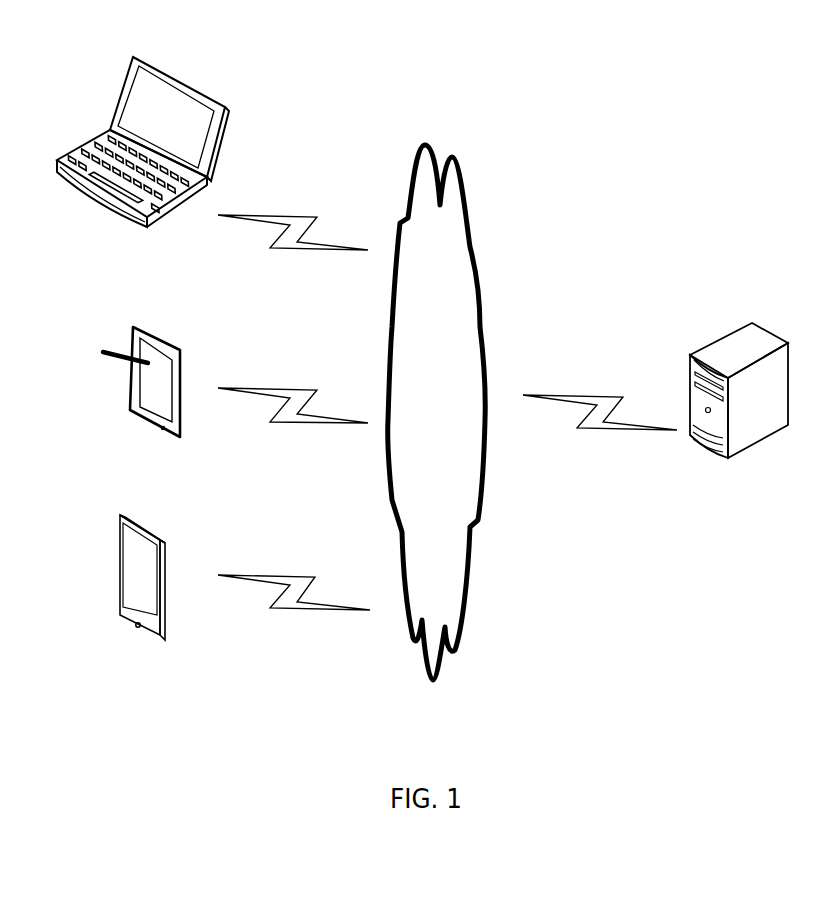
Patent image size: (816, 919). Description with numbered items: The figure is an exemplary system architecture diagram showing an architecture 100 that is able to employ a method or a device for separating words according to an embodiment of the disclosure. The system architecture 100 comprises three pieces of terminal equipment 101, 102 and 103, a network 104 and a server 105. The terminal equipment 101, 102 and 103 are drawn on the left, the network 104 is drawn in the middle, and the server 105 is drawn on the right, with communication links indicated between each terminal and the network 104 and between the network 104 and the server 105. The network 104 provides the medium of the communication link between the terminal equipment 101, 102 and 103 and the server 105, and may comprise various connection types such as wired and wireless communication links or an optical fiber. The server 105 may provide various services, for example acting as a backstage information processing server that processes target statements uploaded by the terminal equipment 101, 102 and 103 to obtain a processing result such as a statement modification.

The system architecture 100 is at (703, 46).
The terminal equipment 101 is at (142, 607).
The terminal equipment 102 is at (141, 404).
The terminal equipment 103 is at (143, 161).
The network 104 is at (437, 412).
The server 105 is at (739, 412).